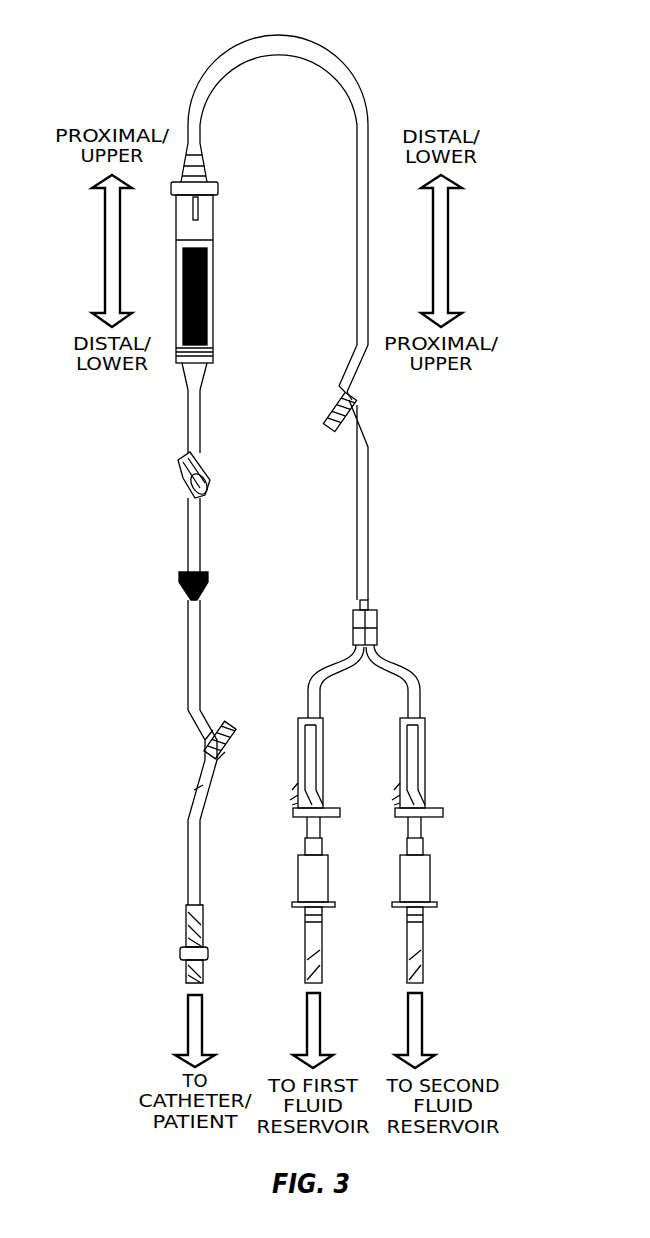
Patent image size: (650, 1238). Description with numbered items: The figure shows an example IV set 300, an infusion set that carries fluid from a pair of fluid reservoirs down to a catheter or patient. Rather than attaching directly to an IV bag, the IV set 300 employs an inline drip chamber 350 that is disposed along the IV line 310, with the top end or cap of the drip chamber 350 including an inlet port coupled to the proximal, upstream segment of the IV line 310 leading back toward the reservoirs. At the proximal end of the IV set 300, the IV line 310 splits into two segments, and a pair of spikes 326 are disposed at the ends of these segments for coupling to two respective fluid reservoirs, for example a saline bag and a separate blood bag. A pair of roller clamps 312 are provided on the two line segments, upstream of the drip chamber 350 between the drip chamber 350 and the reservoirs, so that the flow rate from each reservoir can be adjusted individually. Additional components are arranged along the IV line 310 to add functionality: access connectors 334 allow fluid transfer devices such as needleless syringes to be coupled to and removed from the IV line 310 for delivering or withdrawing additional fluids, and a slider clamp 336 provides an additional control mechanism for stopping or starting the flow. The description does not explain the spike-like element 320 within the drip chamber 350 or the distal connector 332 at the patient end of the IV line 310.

The IV set 300 is at (178, 53).
The IV line 310 is at (335, 62).
The drip spike / air vent 320 is at (198, 212).
The inline drip chamber 350 is at (207, 318).
The slider clamp 336 is at (175, 480).
The access connectors 334 is at (227, 726).
The patient connector 332 is at (180, 953).
The roller clamps 312 is at (323, 755).
The spikes 326 is at (321, 933).